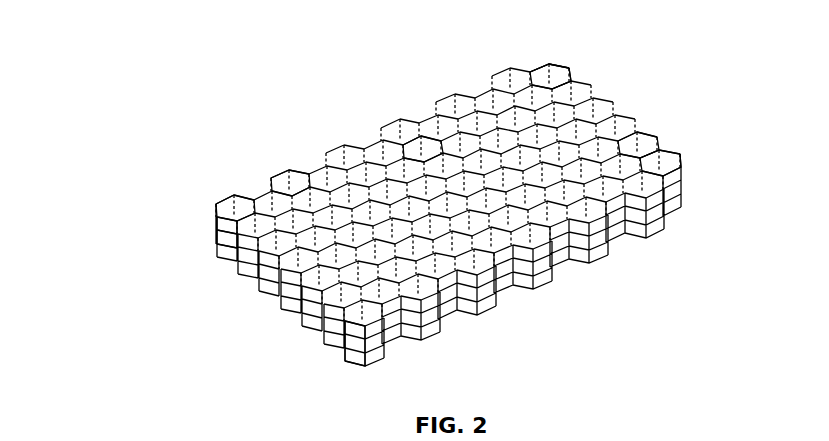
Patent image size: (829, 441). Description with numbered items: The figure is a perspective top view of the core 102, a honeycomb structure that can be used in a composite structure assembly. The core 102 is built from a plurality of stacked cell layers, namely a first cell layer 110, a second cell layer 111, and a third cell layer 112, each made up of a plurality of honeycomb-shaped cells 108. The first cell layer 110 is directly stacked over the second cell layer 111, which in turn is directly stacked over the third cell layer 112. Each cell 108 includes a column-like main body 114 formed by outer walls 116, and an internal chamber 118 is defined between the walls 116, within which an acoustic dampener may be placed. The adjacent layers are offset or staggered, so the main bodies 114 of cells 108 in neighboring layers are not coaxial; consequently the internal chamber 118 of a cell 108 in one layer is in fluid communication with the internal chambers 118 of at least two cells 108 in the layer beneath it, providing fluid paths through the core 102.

The core 102 is at (190, 173).
The cell 108 is at (670, 152).
The first cell layer 110 is at (232, 218).
The second cell layer 111 is at (220, 238).
The third cell layer 112 is at (226, 254).
The main body 114 is at (572, 66).
The outer wall 116 is at (580, 75).
The internal chamber 118 is at (558, 66).